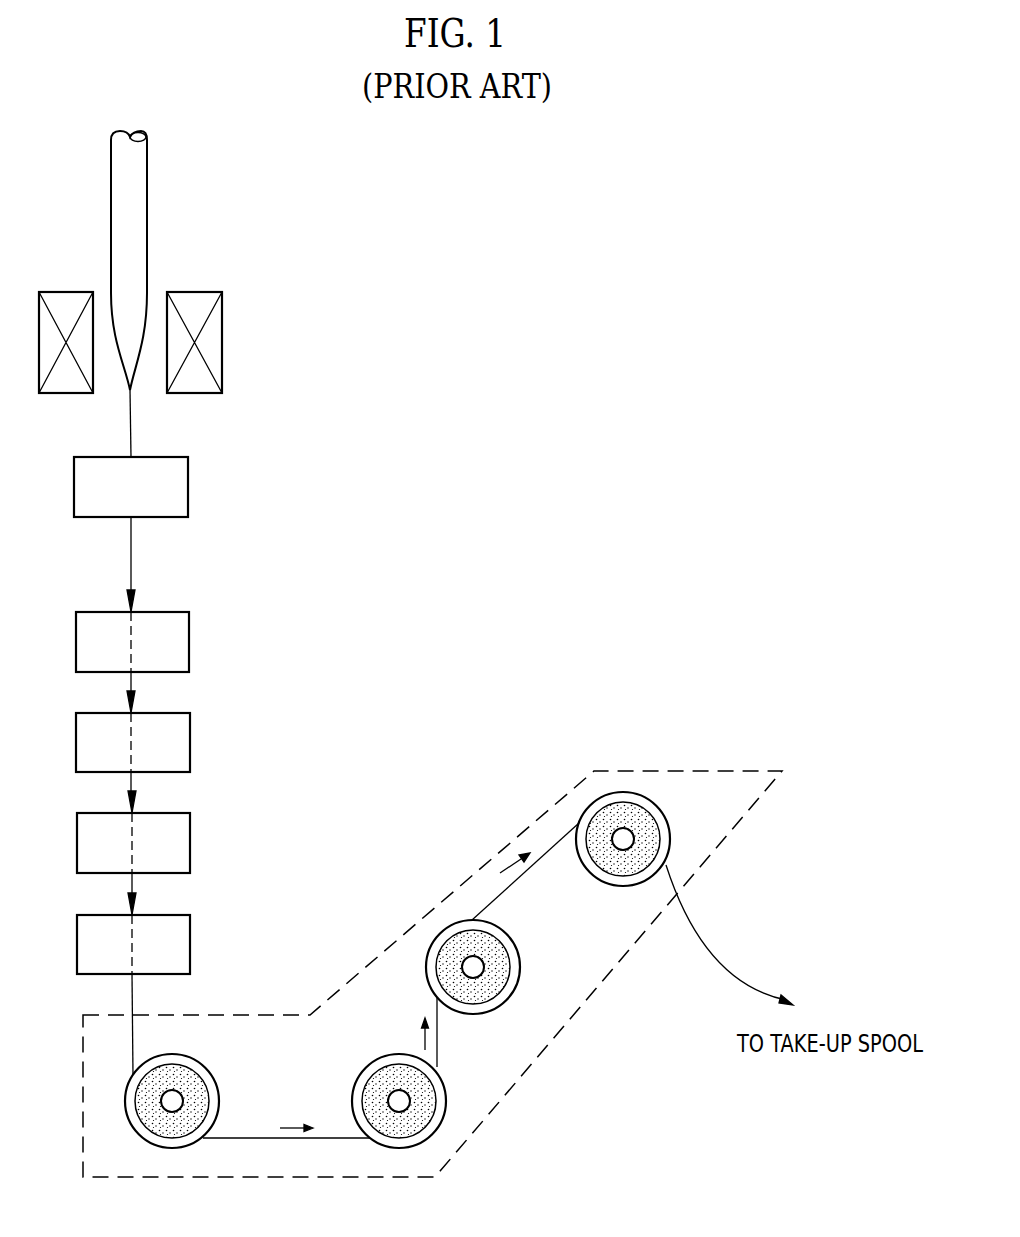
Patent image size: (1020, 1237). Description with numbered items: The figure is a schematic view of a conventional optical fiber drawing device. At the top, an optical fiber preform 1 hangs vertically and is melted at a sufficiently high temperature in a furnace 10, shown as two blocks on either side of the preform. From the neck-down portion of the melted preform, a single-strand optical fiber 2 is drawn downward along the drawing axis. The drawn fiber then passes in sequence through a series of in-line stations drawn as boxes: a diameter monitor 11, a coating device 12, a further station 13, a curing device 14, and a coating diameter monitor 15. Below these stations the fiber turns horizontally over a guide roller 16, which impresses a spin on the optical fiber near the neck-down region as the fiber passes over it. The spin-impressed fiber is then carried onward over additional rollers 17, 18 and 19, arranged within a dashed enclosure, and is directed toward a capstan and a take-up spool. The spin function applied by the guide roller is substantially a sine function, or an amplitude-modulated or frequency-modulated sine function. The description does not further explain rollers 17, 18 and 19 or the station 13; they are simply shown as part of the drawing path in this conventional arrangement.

The optical fiber preform 1 is at (148, 212).
The single-strand optical fiber 2 is at (131, 420).
The furnace 10 is at (222, 340).
The diameter monitor 11 is at (188, 487).
The coating device 12 is at (189, 640).
The primary coating curing device 13 is at (190, 740).
The curing device 14 is at (190, 842).
The coating diameter monitor 15 is at (190, 942).
The guide roller 16 is at (219, 1097).
The pulley 17 is at (446, 1101).
The pulley 18 is at (520, 967).
The pulley 19 is at (670, 840).